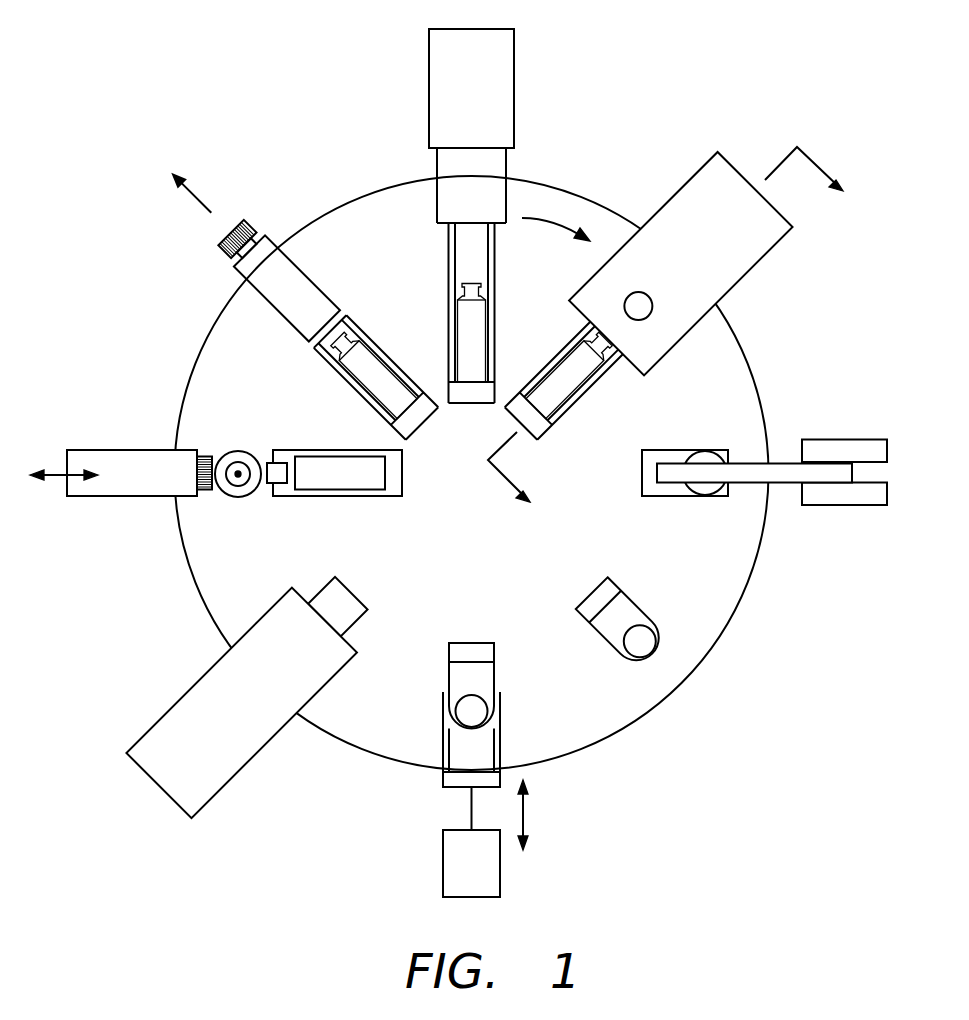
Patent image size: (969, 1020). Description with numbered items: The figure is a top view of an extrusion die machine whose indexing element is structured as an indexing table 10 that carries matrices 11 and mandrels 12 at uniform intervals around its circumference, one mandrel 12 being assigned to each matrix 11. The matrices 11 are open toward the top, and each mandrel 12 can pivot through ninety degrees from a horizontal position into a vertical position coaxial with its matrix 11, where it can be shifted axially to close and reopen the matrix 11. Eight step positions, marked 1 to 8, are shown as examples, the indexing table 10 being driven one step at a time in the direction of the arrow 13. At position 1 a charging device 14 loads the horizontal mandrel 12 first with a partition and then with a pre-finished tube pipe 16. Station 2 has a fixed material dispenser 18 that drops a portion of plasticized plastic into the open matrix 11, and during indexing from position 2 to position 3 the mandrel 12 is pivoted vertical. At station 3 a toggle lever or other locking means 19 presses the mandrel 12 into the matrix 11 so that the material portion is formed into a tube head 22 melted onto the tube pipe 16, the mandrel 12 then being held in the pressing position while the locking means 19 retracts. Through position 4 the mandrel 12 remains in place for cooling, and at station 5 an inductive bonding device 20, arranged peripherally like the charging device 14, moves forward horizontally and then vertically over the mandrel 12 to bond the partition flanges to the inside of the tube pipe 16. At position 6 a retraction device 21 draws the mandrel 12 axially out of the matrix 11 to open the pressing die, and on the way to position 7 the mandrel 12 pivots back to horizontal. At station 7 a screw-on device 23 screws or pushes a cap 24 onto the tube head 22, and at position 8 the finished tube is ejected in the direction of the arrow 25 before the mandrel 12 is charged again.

The step position 1 is at (487, 180).
The step position 2 is at (675, 342).
The step position 3 is at (764, 494).
The step position 4 is at (625, 673).
The step position 5 is at (458, 725).
The step position 6 is at (282, 622).
The step position 7 is at (161, 451).
The step position 8 is at (287, 269).
The indexing table 10 is at (580, 202).
The matrix 11 is at (660, 655).
The mandrel 12 is at (460, 355).
The arrow 13 is at (548, 228).
The charging device 14 is at (436, 81).
The tube pipe 16 is at (449, 262).
The material dispenser 18 is at (766, 238).
The locking means 19 is at (780, 462).
The inductive bonding device 20 is at (487, 873).
The retraction device 21 is at (245, 752).
The tube head 22 is at (287, 485).
The screw-on device 23 is at (80, 495).
The cap 24 is at (205, 492).
The arrow 25 is at (178, 179).